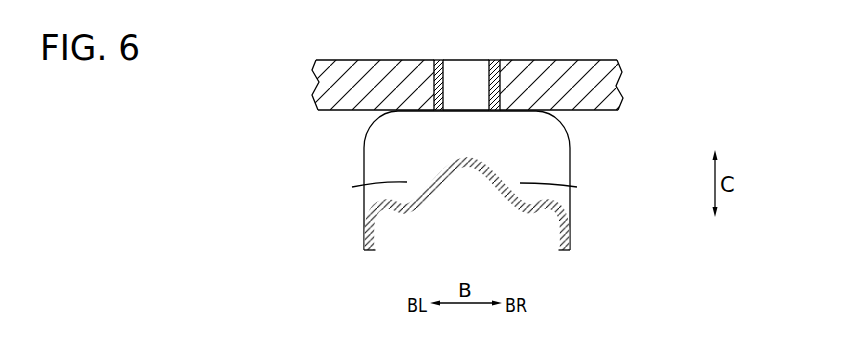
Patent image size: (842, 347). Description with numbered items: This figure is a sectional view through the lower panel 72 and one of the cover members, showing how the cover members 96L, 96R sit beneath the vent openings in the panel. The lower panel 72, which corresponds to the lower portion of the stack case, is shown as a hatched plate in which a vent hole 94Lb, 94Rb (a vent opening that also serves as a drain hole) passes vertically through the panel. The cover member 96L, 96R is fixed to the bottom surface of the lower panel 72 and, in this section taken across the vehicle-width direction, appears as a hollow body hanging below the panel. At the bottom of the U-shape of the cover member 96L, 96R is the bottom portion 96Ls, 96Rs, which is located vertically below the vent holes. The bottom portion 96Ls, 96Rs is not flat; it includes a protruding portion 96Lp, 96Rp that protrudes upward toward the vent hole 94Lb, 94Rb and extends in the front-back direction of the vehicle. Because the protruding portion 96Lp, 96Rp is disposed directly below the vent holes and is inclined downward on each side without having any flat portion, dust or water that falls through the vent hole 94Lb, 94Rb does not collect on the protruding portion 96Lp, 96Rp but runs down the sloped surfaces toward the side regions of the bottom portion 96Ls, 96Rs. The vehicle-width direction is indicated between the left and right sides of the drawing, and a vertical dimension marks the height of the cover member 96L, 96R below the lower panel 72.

The lower panel 72 is at (400, 56).
The vent hole 94Lb is at (494, 58).
The vent hole 94Rb is at (489, 68).
The cover member 96L is at (467, 183).
The cover member 96R is at (585, 156).
The protruding portion 96Lp is at (410, 194).
The protruding portion 96Rp is at (465, 154).
The bottom portion 96Ls is at (466, 216).
The bottom portion 96Rs is at (382, 198).